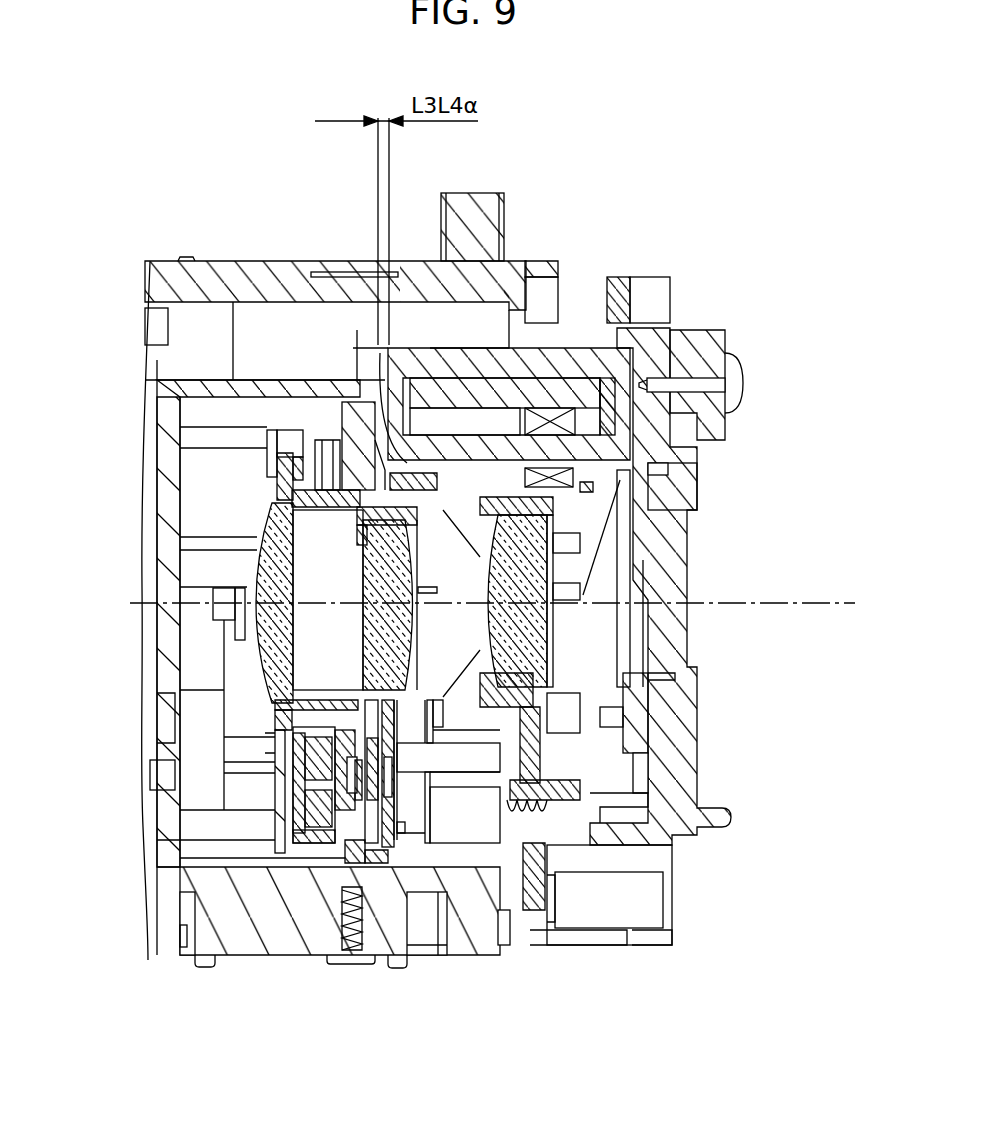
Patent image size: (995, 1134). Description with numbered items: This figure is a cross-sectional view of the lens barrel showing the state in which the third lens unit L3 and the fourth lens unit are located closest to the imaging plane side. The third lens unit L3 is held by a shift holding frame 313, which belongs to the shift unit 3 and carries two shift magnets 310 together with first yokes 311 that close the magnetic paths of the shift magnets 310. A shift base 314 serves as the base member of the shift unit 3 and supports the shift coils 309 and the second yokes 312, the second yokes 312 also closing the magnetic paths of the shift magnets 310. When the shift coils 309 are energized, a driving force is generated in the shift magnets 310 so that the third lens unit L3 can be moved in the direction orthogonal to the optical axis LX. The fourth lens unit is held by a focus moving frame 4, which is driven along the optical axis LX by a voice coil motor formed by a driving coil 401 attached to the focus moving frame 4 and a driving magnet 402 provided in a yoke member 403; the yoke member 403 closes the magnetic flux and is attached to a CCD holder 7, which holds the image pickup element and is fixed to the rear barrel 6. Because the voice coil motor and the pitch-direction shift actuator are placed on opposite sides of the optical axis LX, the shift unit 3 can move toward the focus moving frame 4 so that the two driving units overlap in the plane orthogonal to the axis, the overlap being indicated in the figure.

The shift unit 3 is at (332, 410).
The shift base 314 is at (345, 398).
The rear barrel 6 is at (157, 387).
The shift holding frame 313 is at (290, 505).
The third lens unit L3 is at (378, 572).
The shift magnets 310 is at (315, 812).
The first yokes 311 is at (270, 850).
The shift coils 309 is at (343, 815).
The second yokes 312 is at (397, 837).
The yoke member 403 is at (566, 350).
The CCD holder 7 is at (673, 353).
The driving magnet 402 is at (590, 387).
The driving coil 401 is at (577, 482).
The focus moving frame 4 is at (590, 790).
The optical axis LX is at (810, 605).